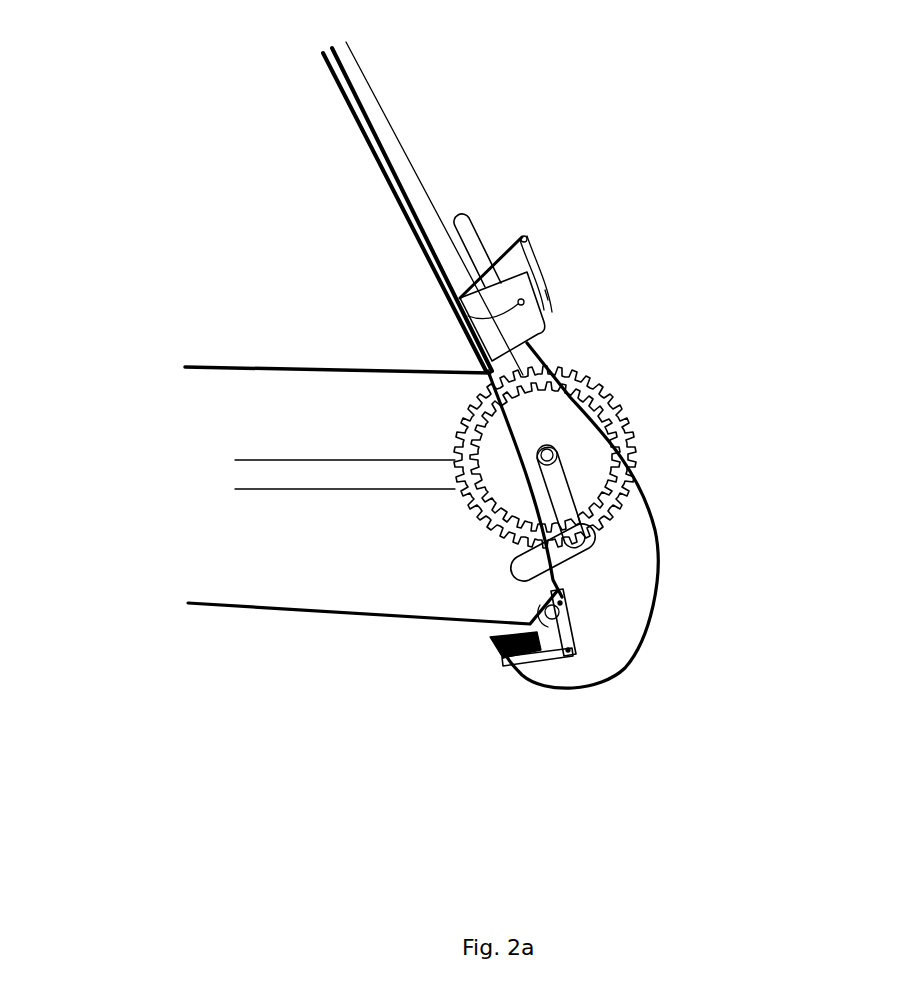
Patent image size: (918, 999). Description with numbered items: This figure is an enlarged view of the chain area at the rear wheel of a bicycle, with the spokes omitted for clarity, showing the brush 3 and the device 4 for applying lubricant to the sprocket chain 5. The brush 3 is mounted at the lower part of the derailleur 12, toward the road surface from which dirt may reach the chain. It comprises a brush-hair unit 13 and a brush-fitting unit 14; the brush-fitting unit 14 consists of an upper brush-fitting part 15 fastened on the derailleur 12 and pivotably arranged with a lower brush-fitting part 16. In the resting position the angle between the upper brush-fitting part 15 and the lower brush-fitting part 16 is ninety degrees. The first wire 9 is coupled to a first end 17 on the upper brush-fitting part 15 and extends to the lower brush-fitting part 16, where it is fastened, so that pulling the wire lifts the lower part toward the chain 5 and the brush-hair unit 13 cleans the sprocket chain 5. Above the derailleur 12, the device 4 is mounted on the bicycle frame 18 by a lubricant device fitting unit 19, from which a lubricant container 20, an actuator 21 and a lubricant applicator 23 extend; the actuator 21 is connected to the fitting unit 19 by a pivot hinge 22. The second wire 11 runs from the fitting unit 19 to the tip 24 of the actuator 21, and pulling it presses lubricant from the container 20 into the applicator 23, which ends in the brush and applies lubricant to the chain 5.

The brush 3 is at (540, 698).
The device for applying lubricant 4 is at (440, 321).
The sprocket chain 5 is at (247, 368).
The first wire 9 is at (333, 78).
The second wire 11 is at (390, 145).
The derailleur 12 is at (560, 452).
The brush-hair unit 13 is at (485, 628).
The brush-fitting unit 14 is at (507, 660).
The upper brush-fitting part 15 is at (565, 615).
The lower brush-fitting part 16 is at (578, 657).
The first end 17 is at (557, 580).
The bicycle frame 18 is at (240, 493).
The lubricant device fitting unit 19 is at (547, 320).
The lubricant container 20 is at (463, 227).
The actuator 21 is at (547, 268).
The pivot hinge 22 is at (460, 300).
The lubricant applicator 23 is at (597, 382).
The tip of the tap 24 is at (525, 236).